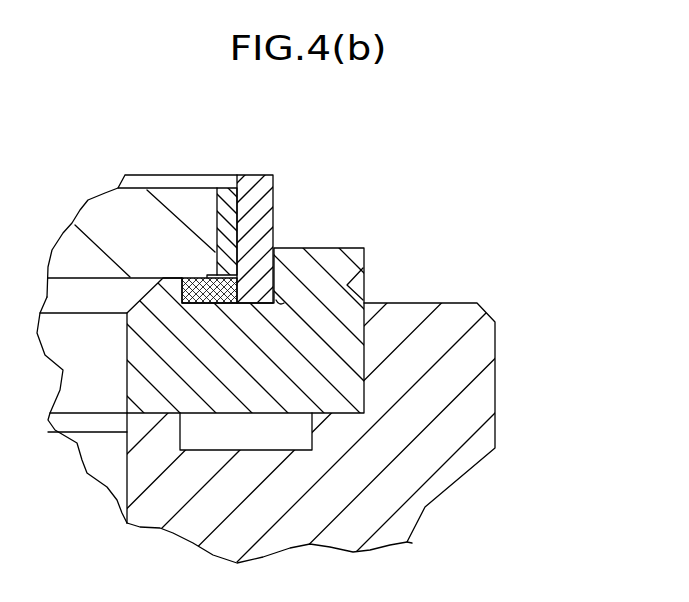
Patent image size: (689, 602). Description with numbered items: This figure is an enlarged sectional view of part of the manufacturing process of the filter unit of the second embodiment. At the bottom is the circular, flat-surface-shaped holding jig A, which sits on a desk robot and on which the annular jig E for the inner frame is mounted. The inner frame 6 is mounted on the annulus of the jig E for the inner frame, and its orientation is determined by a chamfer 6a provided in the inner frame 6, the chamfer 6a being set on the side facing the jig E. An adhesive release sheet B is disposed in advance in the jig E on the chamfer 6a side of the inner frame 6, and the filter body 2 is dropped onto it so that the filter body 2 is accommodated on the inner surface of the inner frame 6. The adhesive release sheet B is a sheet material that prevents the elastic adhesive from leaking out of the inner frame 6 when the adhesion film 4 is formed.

The filter body 2 is at (138, 203).
The adhesion film 4 is at (228, 195).
The inner frame 6 is at (274, 167).
The chamfer 6a is at (280, 308).
The adhesive release sheet B is at (196, 285).
The jig for the inner frame E is at (348, 352).
The holding jig A is at (515, 353).